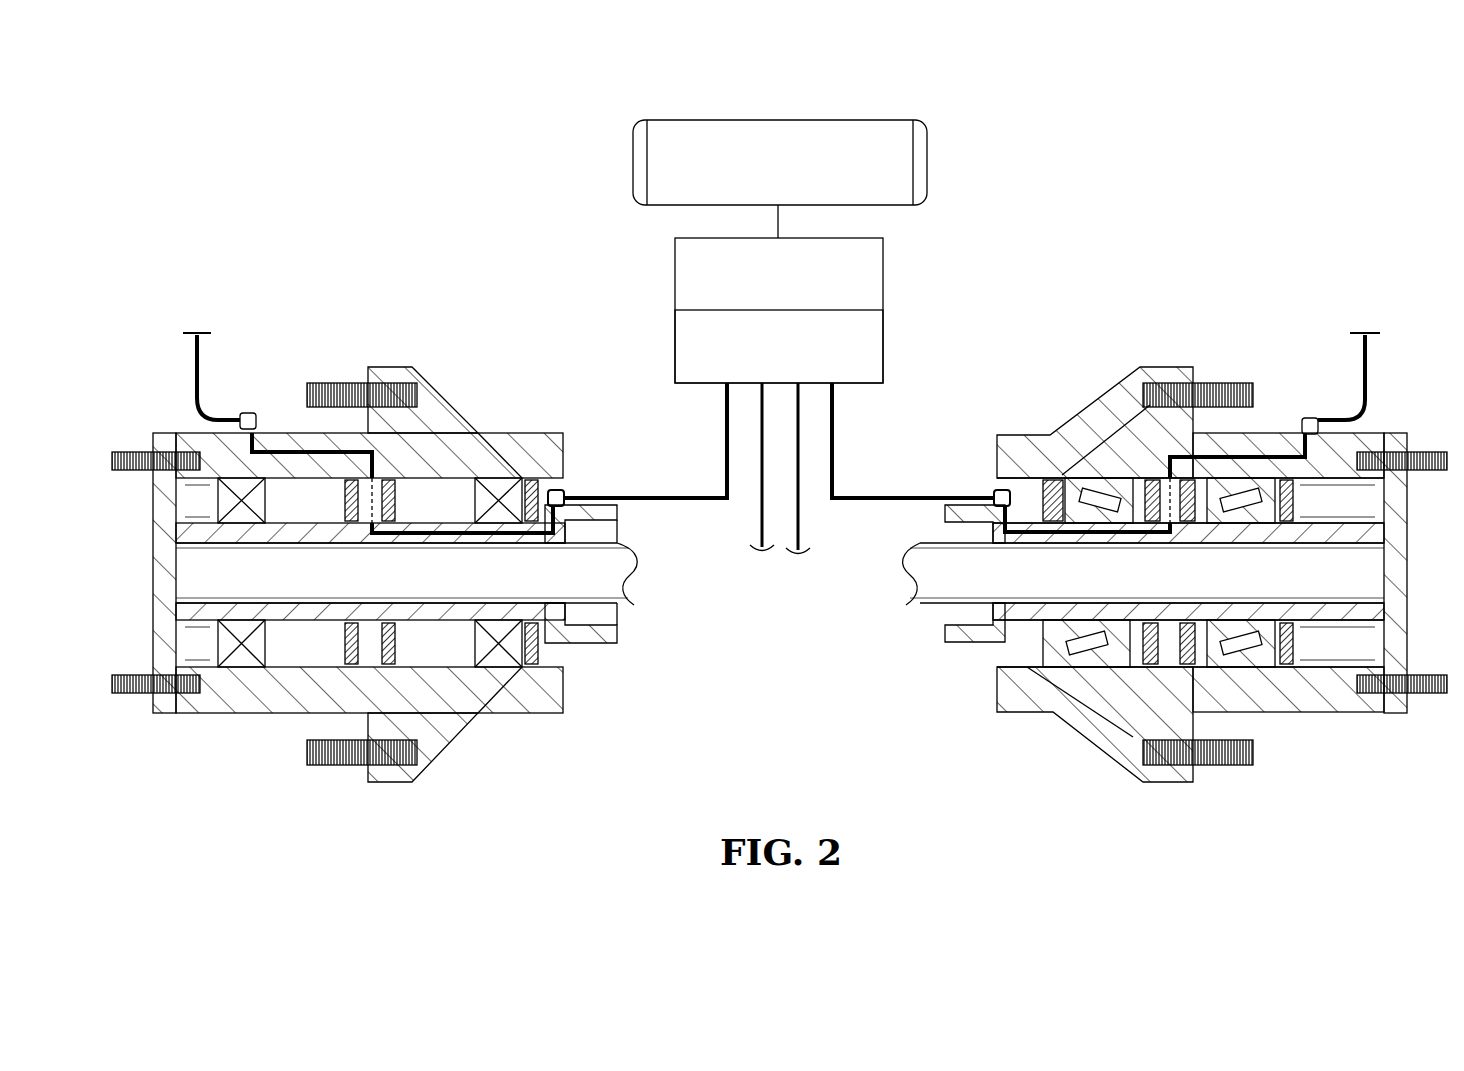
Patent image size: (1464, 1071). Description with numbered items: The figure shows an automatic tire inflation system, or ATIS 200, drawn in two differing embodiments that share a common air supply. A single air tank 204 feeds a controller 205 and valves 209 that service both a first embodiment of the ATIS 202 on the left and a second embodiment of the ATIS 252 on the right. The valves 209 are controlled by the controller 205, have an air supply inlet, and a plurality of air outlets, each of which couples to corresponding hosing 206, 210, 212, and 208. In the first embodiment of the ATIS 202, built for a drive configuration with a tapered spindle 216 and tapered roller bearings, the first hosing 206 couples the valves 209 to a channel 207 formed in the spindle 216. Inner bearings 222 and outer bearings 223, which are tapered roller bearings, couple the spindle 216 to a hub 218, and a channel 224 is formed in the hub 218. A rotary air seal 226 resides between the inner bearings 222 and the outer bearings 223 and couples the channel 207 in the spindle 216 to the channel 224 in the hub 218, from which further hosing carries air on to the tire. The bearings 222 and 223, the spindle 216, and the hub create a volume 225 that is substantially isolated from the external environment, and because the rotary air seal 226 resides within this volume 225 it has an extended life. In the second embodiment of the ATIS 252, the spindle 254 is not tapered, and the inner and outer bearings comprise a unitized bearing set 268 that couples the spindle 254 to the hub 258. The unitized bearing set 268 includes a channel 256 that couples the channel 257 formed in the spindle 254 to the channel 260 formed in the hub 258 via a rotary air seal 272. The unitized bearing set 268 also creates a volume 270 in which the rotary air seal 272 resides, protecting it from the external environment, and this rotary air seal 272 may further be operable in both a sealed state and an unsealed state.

The automatic tire inflation system 200 is at (332, 92).
The first embodiment of the ATIS 202 is at (300, 298).
The air tank 204 is at (633, 160).
The controller 205 is at (675, 275).
The first hosing 206 is at (660, 492).
The channel formed in the spindle 207 is at (447, 545).
The hosing 208 is at (898, 492).
The valves 209 is at (675, 348).
The hosing 210 is at (760, 512).
The hosing 212 is at (800, 512).
The spindle 216 is at (600, 645).
The hub 218 is at (450, 405).
The inner bearings 222 is at (500, 485).
The outer bearings 223 is at (225, 508).
The channel formed in the hub 224 is at (270, 450).
The volume 225 is at (298, 652).
The rotary air seal 226 is at (400, 488).
The second embodiment of the ATIS 252 is at (1268, 298).
The spindle 254 is at (955, 645).
The channel 256 is at (1160, 484).
The channel formed in the spindle 257 is at (1033, 545).
The hub 258 is at (1120, 395).
The channel formed in the hub 260 is at (1268, 455).
The unitized bearing set 268 is at (1095, 683).
The volume 270 is at (1133, 637).
The rotary air seal 272 is at (1160, 667).